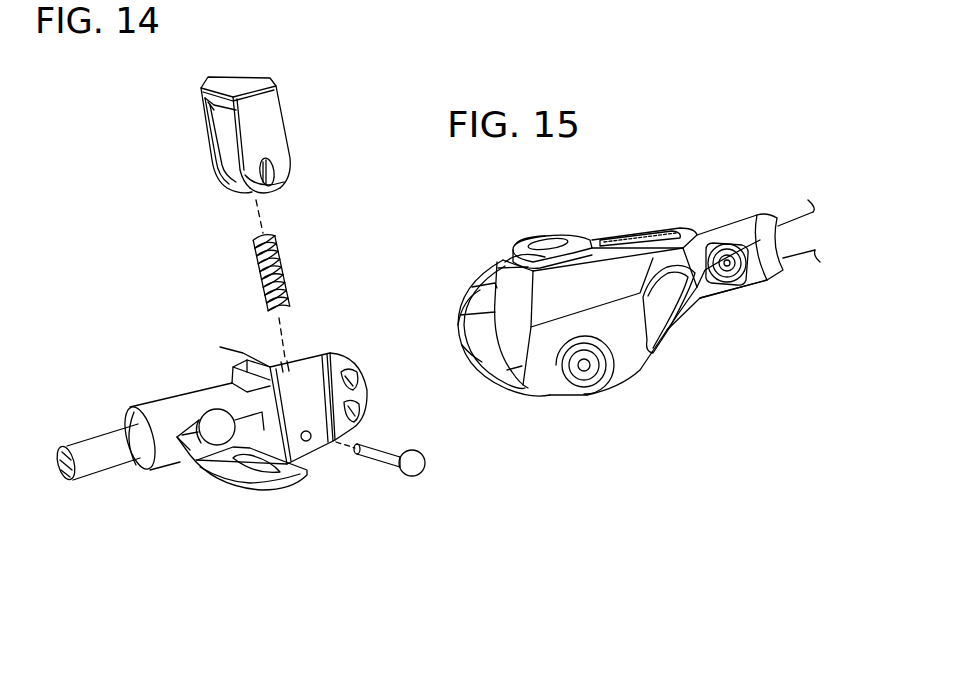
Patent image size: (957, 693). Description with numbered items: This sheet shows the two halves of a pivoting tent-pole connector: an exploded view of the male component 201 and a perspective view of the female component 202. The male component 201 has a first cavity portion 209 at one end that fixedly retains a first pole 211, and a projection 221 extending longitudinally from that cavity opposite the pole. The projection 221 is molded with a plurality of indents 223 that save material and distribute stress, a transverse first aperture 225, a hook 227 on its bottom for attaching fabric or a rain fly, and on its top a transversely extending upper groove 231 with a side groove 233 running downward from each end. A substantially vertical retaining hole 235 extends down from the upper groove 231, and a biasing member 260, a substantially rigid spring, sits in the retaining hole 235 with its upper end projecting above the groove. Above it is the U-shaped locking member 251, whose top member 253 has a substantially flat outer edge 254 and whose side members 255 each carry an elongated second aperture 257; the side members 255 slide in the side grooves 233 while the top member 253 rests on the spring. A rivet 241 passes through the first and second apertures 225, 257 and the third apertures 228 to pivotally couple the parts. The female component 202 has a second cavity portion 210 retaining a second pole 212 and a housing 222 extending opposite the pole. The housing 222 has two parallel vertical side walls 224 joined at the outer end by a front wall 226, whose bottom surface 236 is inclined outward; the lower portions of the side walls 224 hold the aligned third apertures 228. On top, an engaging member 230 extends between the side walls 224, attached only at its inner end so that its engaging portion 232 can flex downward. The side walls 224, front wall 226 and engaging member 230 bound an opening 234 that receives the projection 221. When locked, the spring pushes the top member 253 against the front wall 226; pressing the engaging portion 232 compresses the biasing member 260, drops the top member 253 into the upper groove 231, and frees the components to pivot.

In FIG. 14, the male component 201 is at (211, 508).
In FIG. 15, the female component 202 is at (612, 281).
In FIG. 14, the first cavity portion 209 is at (158, 405).
In FIG. 15, the second cavity portion 210 is at (717, 238).
In FIG. 14, the first pole 211 is at (95, 465).
In FIG. 15, the second pole 212 is at (790, 228).
In FIG. 14, the projection 221 is at (306, 408).
In FIG. 15, the housing 222 is at (645, 356).
In FIG. 14, the indents 223 is at (367, 413).
In FIG. 15, the side walls 224 is at (578, 285).
In FIG. 14, the first aperture 225 is at (309, 439).
In FIG. 15, the front wall 226 is at (522, 276).
In FIG. 14, the hook 227 is at (260, 493).
In FIG. 15, the third aperture 228 is at (587, 370).
In FIG. 15, the engaging member 230 is at (596, 240).
In FIG. 14, the upper groove 231 is at (297, 362).
In FIG. 15, the engaging portion 232 is at (536, 240).
In FIG. 14, the side groove 233 is at (379, 385).
In FIG. 15, the opening 234 is at (490, 388).
In FIG. 14, the retaining hole 235 is at (288, 360).
In FIG. 15, the bottom surface 236 is at (463, 322).
In FIG. 14, the rivet 241 is at (418, 472).
In FIG. 14, the locking member 251 is at (239, 109).
In FIG. 14, the top member 253 is at (237, 81).
In FIG. 14, the outer edge 254 is at (206, 98).
In FIG. 14, the side member 255 is at (266, 116).
In FIG. 14, the second aperture 257 is at (275, 176).
In FIG. 14, the biasing member 260 is at (257, 280).